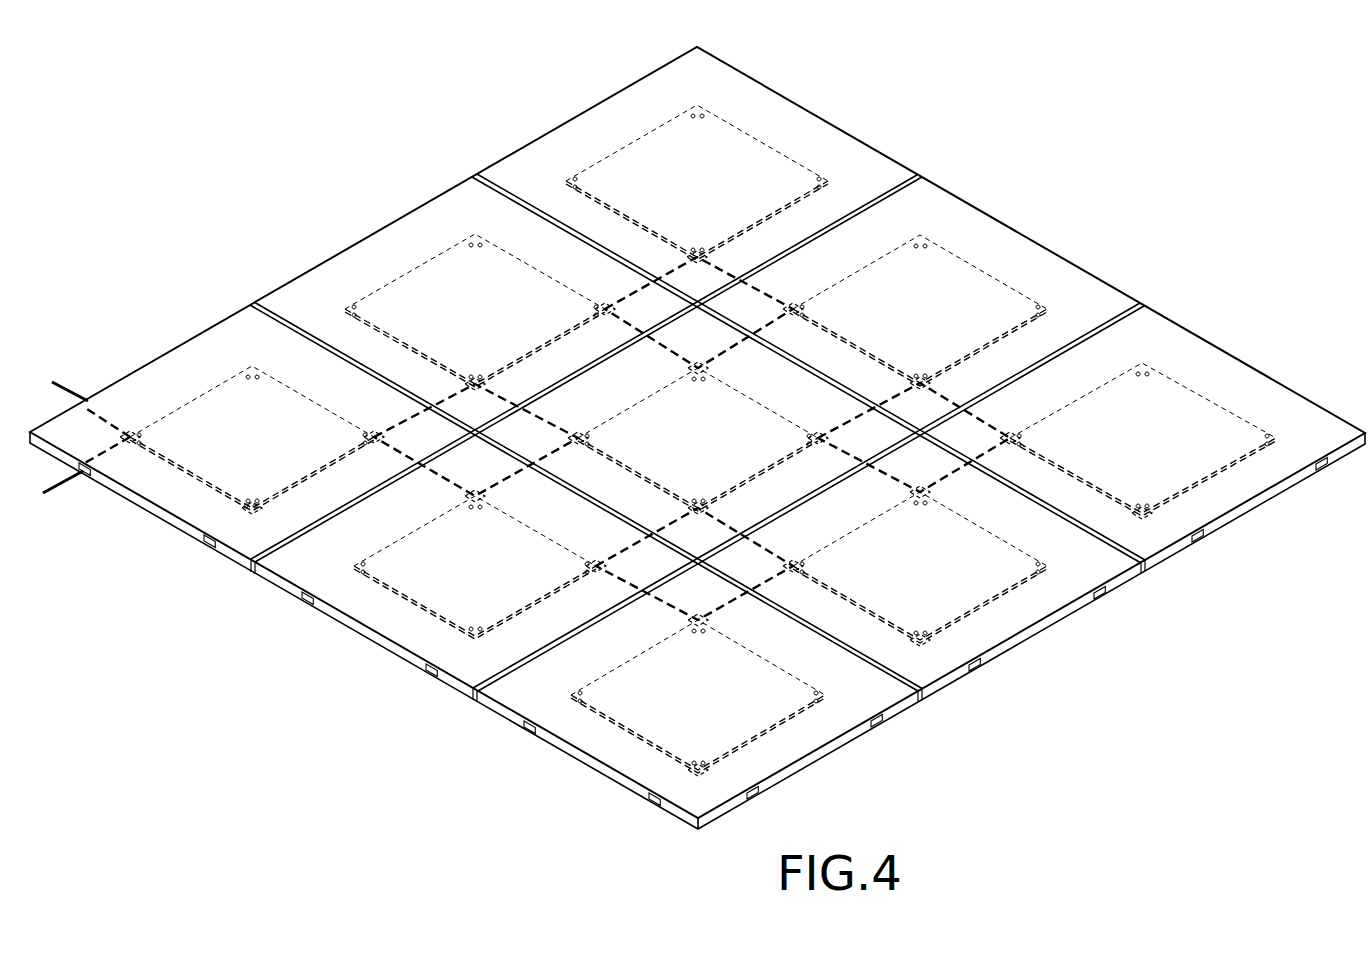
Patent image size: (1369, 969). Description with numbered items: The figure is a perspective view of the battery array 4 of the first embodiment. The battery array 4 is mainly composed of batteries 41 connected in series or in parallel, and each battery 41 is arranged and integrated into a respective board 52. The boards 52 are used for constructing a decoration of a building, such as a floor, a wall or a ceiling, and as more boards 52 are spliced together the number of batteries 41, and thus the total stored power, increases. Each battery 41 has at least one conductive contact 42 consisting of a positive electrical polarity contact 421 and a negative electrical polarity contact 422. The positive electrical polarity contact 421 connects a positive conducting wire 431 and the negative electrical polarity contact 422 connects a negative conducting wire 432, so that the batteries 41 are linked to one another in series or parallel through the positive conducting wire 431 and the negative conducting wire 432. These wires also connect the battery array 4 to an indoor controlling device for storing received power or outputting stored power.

The battery array 4 is at (366, 292).
The battery 41 is at (428, 285).
The conductive contact 42 is at (243, 682).
The positive electrical polarity contact 421 is at (237, 505).
The negative electrical polarity contact 422 is at (262, 508).
The positive conducting wire 431 is at (70, 392).
The negative conducting wire 432 is at (63, 487).
The board 52 is at (458, 208).